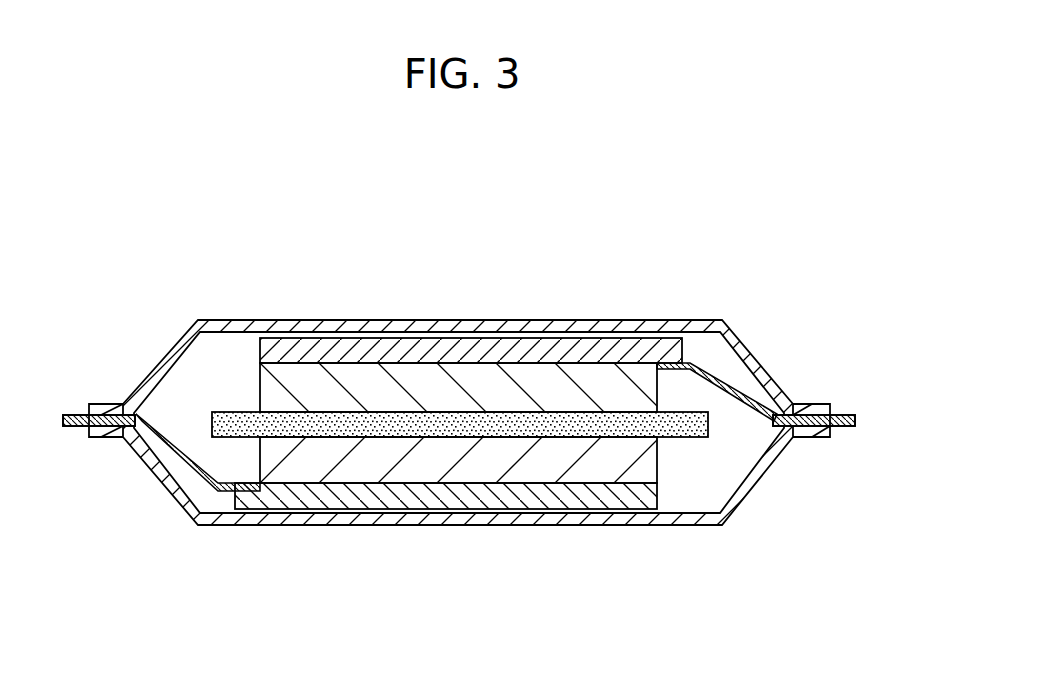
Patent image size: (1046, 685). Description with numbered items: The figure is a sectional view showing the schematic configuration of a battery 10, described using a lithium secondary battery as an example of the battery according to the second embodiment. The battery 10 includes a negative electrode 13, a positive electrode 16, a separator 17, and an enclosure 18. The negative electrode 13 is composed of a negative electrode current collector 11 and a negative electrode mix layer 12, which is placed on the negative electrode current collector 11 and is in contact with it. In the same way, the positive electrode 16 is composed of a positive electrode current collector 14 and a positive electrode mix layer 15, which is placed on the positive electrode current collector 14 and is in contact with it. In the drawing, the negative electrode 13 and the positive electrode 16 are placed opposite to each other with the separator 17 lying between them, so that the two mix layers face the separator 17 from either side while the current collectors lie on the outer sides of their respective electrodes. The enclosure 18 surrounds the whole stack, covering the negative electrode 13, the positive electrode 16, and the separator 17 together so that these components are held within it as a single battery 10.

The battery 10 is at (576, 160).
The negative electrode current collector 11 is at (500, 493).
The negative electrode mix layer 12 is at (425, 472).
The negative electrode 13 is at (513, 595).
The positive electrode current collector 14 is at (418, 350).
The positive electrode mix layer 15 is at (493, 375).
The positive electrode 16 is at (407, 250).
The separator 17 is at (231, 418).
The enclosure 18 is at (750, 483).